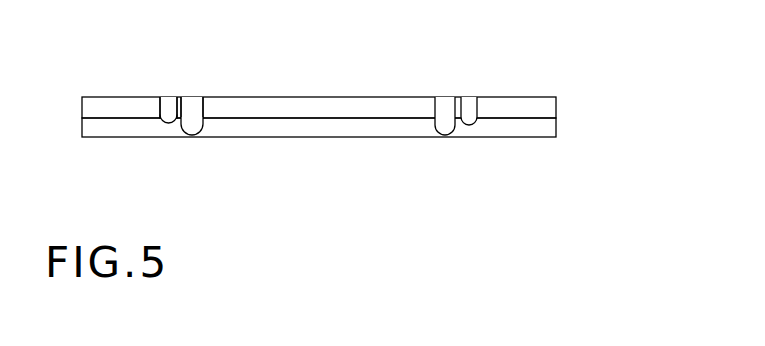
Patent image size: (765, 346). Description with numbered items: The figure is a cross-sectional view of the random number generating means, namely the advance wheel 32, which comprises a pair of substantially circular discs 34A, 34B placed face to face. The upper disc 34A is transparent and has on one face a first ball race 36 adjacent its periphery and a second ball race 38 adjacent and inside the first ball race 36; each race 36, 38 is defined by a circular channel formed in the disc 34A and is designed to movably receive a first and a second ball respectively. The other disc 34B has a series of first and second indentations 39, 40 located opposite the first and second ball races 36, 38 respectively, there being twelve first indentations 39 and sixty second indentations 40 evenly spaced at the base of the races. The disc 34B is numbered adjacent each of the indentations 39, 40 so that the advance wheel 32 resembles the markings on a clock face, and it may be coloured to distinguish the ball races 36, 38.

The advance wheel 32 is at (353, 106).
The disc 34A is at (535, 110).
The disc 34B is at (362, 127).
The first ball race 36 is at (167, 107).
The second ball race 38 is at (193, 107).
The first indentations 39 is at (170, 122).
The second indentations 40 is at (193, 128).